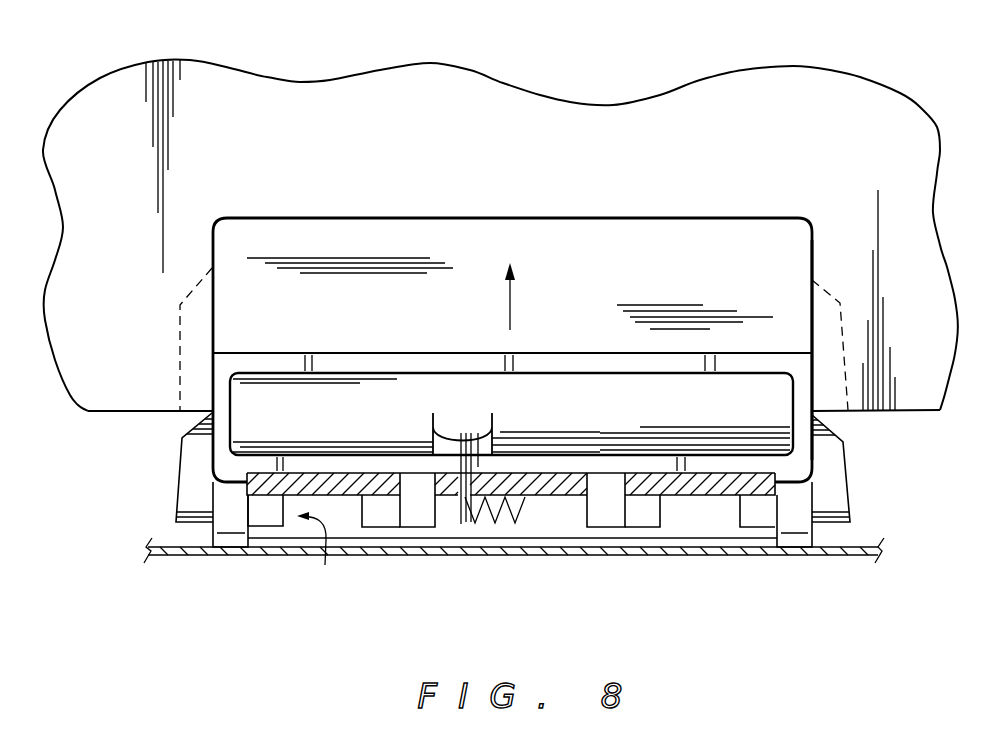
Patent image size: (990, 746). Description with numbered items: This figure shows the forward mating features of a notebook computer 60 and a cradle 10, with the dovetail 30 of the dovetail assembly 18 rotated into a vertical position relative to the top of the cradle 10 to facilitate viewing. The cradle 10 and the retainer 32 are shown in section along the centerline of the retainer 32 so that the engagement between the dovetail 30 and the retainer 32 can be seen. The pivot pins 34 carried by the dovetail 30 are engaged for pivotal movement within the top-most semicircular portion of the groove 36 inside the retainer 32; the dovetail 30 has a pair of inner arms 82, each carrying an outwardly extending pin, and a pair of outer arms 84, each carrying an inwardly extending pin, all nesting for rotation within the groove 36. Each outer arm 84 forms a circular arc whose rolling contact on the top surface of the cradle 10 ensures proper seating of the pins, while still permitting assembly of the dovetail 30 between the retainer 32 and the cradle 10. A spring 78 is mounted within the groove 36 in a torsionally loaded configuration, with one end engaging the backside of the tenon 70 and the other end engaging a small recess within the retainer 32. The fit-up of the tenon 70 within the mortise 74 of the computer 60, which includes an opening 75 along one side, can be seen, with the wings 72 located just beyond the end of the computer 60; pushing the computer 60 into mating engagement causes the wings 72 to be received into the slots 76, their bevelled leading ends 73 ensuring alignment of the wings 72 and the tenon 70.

The cradle 10 is at (843, 556).
The dovetail assembly 18 is at (145, 517).
The dovetail 30 is at (544, 340).
The retainer 32 is at (566, 473).
The pivot pins 34 is at (270, 515).
The groove 36 is at (318, 564).
The notebook computer 60 is at (443, 165).
The tenon 70 is at (452, 352).
The wings 72 is at (197, 480).
The bevelled leading end 73 is at (207, 414).
The mortise 74 is at (596, 220).
The opening 75 is at (786, 244).
The slots 76 is at (178, 345).
The spring 78 is at (520, 510).
The inner arms 82 is at (425, 515).
The outer arms 84 is at (224, 530).